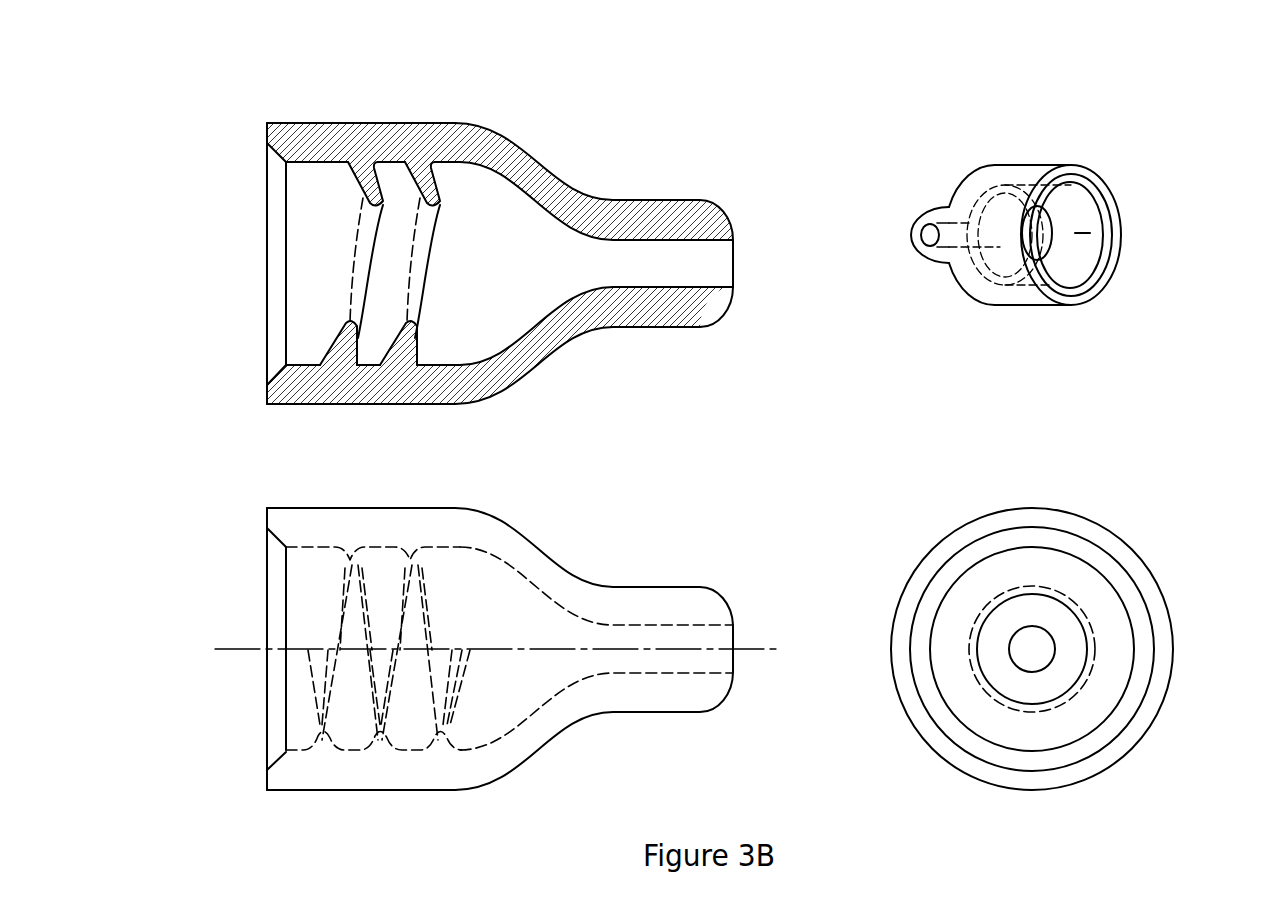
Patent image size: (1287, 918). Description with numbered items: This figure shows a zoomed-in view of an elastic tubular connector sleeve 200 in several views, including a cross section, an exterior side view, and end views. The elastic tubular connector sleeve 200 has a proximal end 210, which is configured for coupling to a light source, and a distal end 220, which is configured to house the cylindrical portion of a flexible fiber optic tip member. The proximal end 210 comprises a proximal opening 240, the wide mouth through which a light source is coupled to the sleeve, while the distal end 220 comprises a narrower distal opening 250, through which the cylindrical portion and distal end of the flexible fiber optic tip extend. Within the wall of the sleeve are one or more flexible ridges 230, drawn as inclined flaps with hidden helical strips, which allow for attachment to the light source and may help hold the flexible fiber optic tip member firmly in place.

The elastic tubular connector sleeve 200 is at (732, 88).
The proximal end 210 is at (267, 405).
The distal end 220 is at (730, 313).
The flexible ridges 230 is at (384, 200).
The proximal opening 240 is at (262, 390).
The distal opening 250 is at (733, 233).